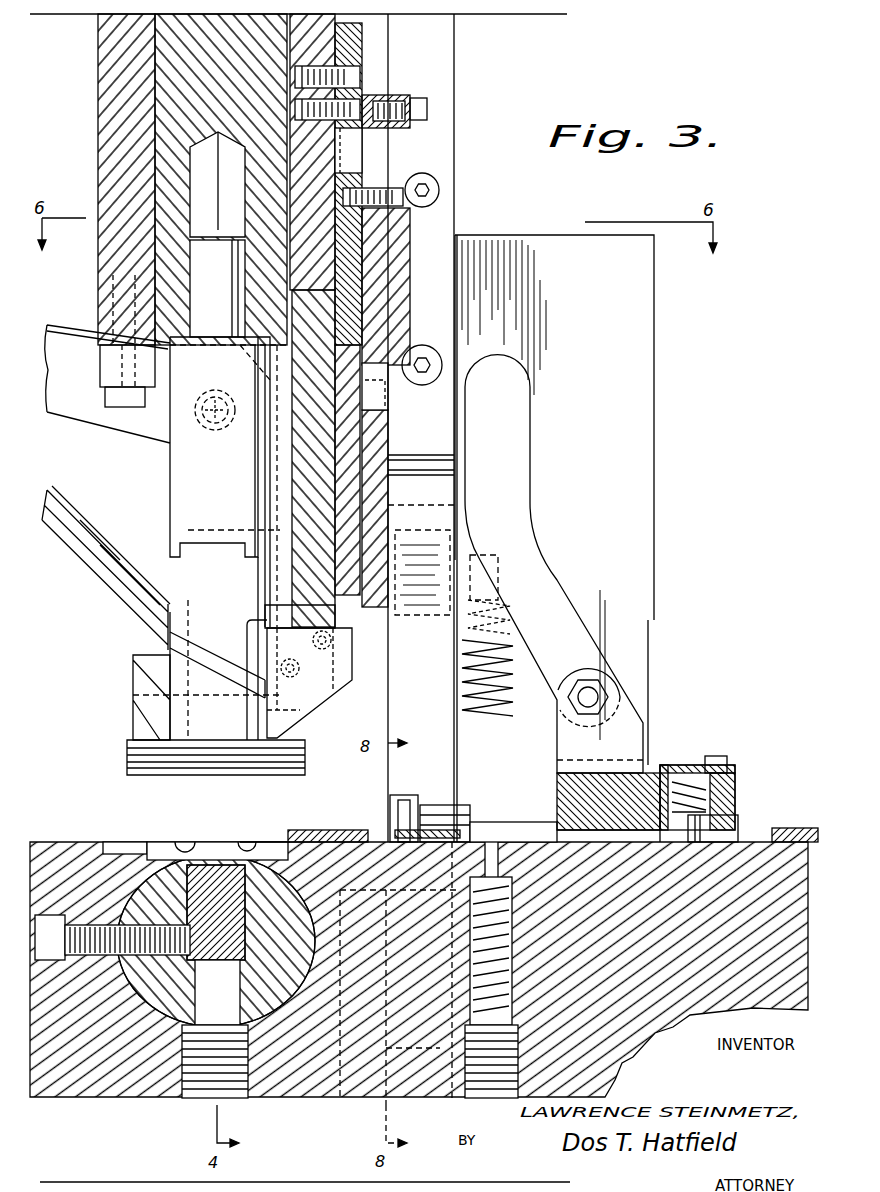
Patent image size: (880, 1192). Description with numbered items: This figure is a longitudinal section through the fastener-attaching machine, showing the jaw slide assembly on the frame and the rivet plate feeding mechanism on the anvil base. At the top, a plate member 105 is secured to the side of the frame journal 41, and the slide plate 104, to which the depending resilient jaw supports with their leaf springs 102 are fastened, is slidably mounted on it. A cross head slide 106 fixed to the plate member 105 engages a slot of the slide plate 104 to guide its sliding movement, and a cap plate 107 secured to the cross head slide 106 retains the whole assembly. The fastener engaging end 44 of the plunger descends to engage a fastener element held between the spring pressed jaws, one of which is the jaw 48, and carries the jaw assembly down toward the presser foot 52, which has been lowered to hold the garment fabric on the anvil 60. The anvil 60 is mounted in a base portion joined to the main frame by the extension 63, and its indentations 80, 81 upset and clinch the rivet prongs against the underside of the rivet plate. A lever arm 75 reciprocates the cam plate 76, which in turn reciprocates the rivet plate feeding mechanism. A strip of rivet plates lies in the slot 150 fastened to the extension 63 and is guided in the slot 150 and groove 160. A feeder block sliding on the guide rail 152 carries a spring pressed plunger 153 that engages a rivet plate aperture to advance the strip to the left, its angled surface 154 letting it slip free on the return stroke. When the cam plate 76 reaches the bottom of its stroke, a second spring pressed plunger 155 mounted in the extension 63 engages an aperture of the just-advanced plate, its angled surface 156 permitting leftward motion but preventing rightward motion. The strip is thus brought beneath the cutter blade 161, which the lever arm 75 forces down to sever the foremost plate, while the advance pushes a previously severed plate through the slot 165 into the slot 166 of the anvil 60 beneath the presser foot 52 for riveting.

The frame journal 41 is at (110, 124).
The fastener engaging end 44 is at (187, 490).
The spring pressed jaw 48 is at (303, 697).
The presser foot 52 is at (127, 752).
The anvil 60 is at (143, 840).
The extension 63 is at (256, 985).
The lever arm 75 is at (440, 110).
The cam plate 76 is at (637, 470).
The indentation 80 is at (173, 825).
The indentation 81 is at (243, 840).
The leaf spring 102 is at (372, 617).
The slide plate 104 is at (364, 95).
The plate member 105 is at (343, 40).
The cross head slide 106 is at (373, 223).
The cap plate 107 is at (397, 267).
The slot 150 is at (800, 822).
The guide rail 152 is at (525, 827).
The spring pressed plunger 153 is at (733, 815).
The angled surface 154 is at (735, 826).
The spring pressed plunger 155 is at (495, 864).
The angled surface 156 is at (498, 837).
The guiding groove 160 is at (630, 836).
The cutter blade 161 is at (423, 779).
The slot 165 is at (298, 830).
The slot 166 is at (233, 812).